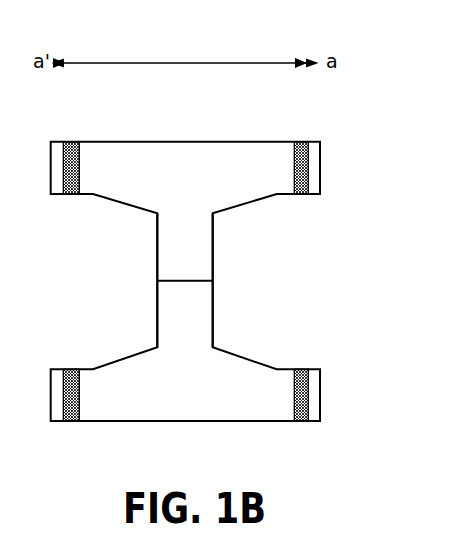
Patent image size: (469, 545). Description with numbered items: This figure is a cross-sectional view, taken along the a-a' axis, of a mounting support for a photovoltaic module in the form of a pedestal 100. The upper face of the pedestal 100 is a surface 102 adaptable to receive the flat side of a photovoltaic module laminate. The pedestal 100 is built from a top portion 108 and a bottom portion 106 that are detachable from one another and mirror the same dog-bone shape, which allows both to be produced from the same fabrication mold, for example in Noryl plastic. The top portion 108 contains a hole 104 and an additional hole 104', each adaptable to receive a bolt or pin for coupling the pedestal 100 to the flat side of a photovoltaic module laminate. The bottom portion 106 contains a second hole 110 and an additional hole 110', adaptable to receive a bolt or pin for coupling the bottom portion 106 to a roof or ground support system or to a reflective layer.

The pedestal 100 is at (376, 74).
The surface 102 is at (181, 140).
The hole 104 is at (82, 146).
The additional hole 104' is at (315, 146).
The bottom portion 106 is at (213, 311).
The top portion 108 is at (213, 237).
The second hole 110 is at (83, 372).
The additional hole 110' is at (315, 372).